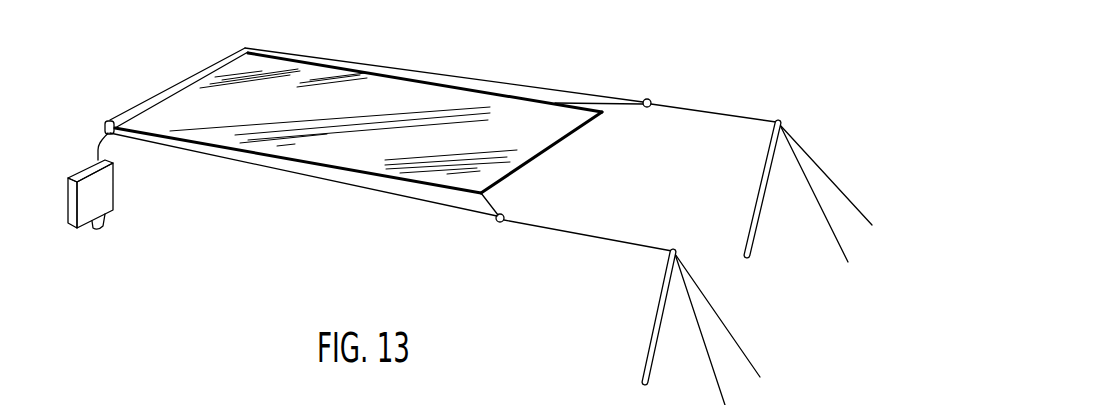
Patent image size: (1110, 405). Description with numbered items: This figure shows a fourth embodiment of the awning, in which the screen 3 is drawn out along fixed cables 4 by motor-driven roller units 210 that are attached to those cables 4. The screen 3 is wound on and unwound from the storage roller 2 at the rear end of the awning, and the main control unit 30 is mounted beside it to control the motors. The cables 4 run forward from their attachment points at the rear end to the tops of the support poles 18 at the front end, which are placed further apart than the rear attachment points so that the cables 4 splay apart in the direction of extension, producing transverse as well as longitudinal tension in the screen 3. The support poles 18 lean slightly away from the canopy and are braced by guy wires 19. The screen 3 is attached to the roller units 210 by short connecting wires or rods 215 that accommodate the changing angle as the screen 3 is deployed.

The storage roller 2 is at (143, 104).
The screen 3 is at (328, 88).
The cables 4 is at (490, 82).
The support poles 18 is at (763, 175).
The guy wires 19 is at (810, 187).
The main control unit 30 is at (85, 210).
The motor-driven roller units 210 is at (652, 100).
The connecting wires or rods 215 is at (627, 105).